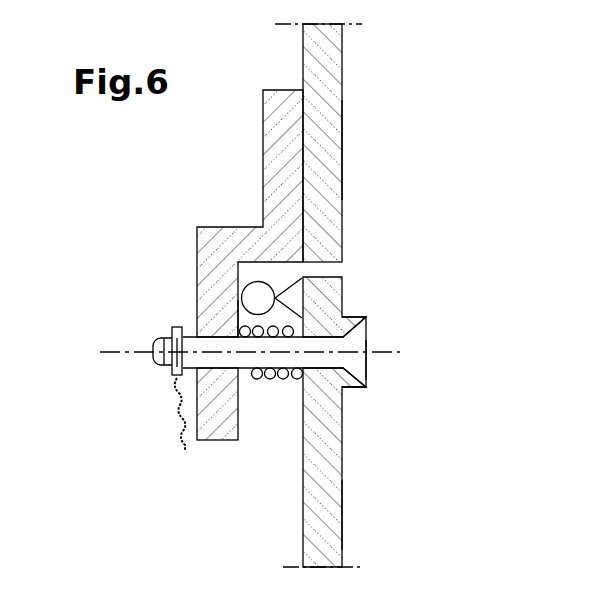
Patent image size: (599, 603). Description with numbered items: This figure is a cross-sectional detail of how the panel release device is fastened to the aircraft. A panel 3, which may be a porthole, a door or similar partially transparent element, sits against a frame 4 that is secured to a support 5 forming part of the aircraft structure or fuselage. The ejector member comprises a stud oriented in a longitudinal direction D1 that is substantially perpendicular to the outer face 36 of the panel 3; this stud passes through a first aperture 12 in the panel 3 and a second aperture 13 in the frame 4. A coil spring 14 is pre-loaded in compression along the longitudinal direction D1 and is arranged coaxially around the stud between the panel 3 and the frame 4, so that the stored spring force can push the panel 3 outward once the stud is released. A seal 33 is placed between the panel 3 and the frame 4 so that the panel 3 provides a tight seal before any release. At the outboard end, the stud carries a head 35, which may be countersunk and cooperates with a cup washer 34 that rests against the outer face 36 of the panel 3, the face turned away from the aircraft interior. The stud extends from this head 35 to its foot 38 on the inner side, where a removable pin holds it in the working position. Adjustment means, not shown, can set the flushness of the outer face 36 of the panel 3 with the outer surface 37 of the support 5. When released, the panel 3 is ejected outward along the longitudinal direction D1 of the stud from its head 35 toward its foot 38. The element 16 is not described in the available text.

The panel 3 is at (330, 455).
The frame 4 is at (213, 237).
The support 5 is at (328, 90).
The first aperture 12 is at (330, 290).
The second aperture 13 is at (217, 336).
The coil spring 14 is at (283, 379).
The securing wire 16 is at (182, 425).
The seal 33 is at (258, 281).
The cup washer 34 is at (351, 388).
The head 35 is at (366, 363).
The outer face 36 is at (350, 517).
The outer surface 37 is at (343, 132).
The foot 38 is at (172, 332).
The longitudinal direction D1 is at (124, 333).